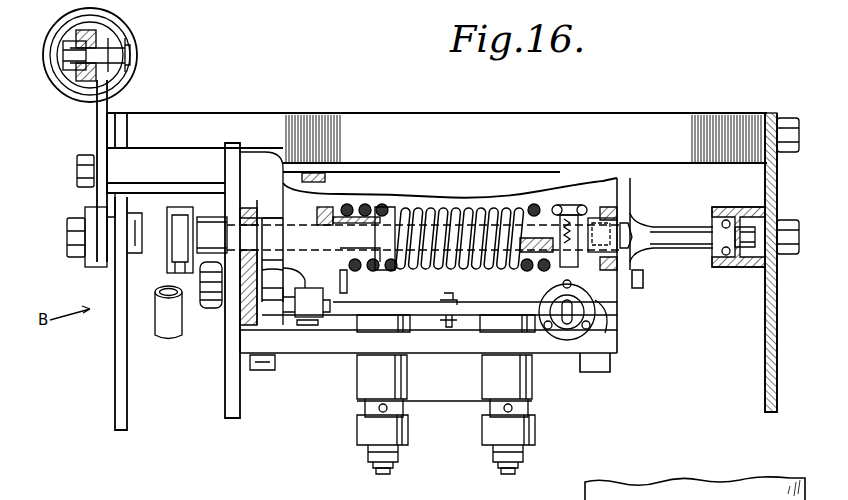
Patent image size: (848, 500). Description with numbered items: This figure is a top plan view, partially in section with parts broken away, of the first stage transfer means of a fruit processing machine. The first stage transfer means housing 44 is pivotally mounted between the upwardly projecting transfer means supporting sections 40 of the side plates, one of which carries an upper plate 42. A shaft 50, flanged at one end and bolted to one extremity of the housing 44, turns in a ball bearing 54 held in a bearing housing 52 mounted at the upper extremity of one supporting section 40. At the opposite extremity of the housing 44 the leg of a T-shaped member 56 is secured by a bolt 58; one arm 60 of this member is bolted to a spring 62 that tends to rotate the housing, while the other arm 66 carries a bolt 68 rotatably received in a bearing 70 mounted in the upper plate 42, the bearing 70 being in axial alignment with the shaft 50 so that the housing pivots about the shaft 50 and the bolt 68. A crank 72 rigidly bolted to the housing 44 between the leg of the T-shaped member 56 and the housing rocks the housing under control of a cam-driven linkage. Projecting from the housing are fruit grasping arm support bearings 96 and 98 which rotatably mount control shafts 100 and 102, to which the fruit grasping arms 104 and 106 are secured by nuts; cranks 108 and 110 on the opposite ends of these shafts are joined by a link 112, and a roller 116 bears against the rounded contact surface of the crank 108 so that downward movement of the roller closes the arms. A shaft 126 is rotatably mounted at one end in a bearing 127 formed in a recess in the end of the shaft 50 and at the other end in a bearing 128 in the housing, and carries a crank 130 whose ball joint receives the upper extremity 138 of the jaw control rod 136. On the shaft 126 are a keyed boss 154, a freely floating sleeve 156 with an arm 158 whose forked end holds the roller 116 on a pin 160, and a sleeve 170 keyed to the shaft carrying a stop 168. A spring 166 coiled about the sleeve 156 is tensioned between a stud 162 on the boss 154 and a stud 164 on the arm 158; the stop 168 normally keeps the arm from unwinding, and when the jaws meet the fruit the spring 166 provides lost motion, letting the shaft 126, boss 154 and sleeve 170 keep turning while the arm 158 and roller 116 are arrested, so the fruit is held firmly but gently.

The transfer means supporting section 40 is at (765, 324).
The upper plate 42 is at (116, 355).
The first stage transfer means housing 44 is at (376, 173).
The shaft 50 is at (661, 229).
The bearing housing 52 is at (745, 207).
The ball bearing 54 is at (730, 268).
The T-shaped member 56 is at (162, 150).
The bolt 58 is at (77, 169).
The arm 60 is at (100, 120).
The spring 62 is at (128, 36).
The arm 66 is at (100, 200).
The bolt 68 is at (68, 238).
The bearing 70 is at (134, 255).
The crank 72 is at (226, 396).
The fruit grasping arm support bearing 96 is at (358, 383).
The fruit grasping arm support bearing 98 is at (532, 383).
The control shaft 100 is at (380, 472).
The control shaft 102 is at (506, 472).
The fruit grasping arm 104 is at (357, 428).
The fruit grasping arm 106 is at (535, 428).
The crank 108 is at (418, 308).
The crank 110 is at (540, 306).
The link 112 is at (455, 300).
The roller 116 is at (310, 328).
The shaft 126 is at (167, 232).
The bearing 127 is at (617, 218).
The bearing 128 is at (207, 308).
The crank 130 is at (183, 210).
The jaw control rod 136 is at (168, 336).
The upper extremity 138 is at (190, 210).
The boss 154 is at (603, 212).
The sleeve 156 is at (388, 214).
The arm 158 is at (284, 352).
The pin 160 is at (315, 326).
The stud 162 is at (569, 205).
The stud 164 is at (348, 284).
The spring 166 is at (468, 210).
The stop 168 is at (275, 303).
The sleeve 170 is at (272, 215).